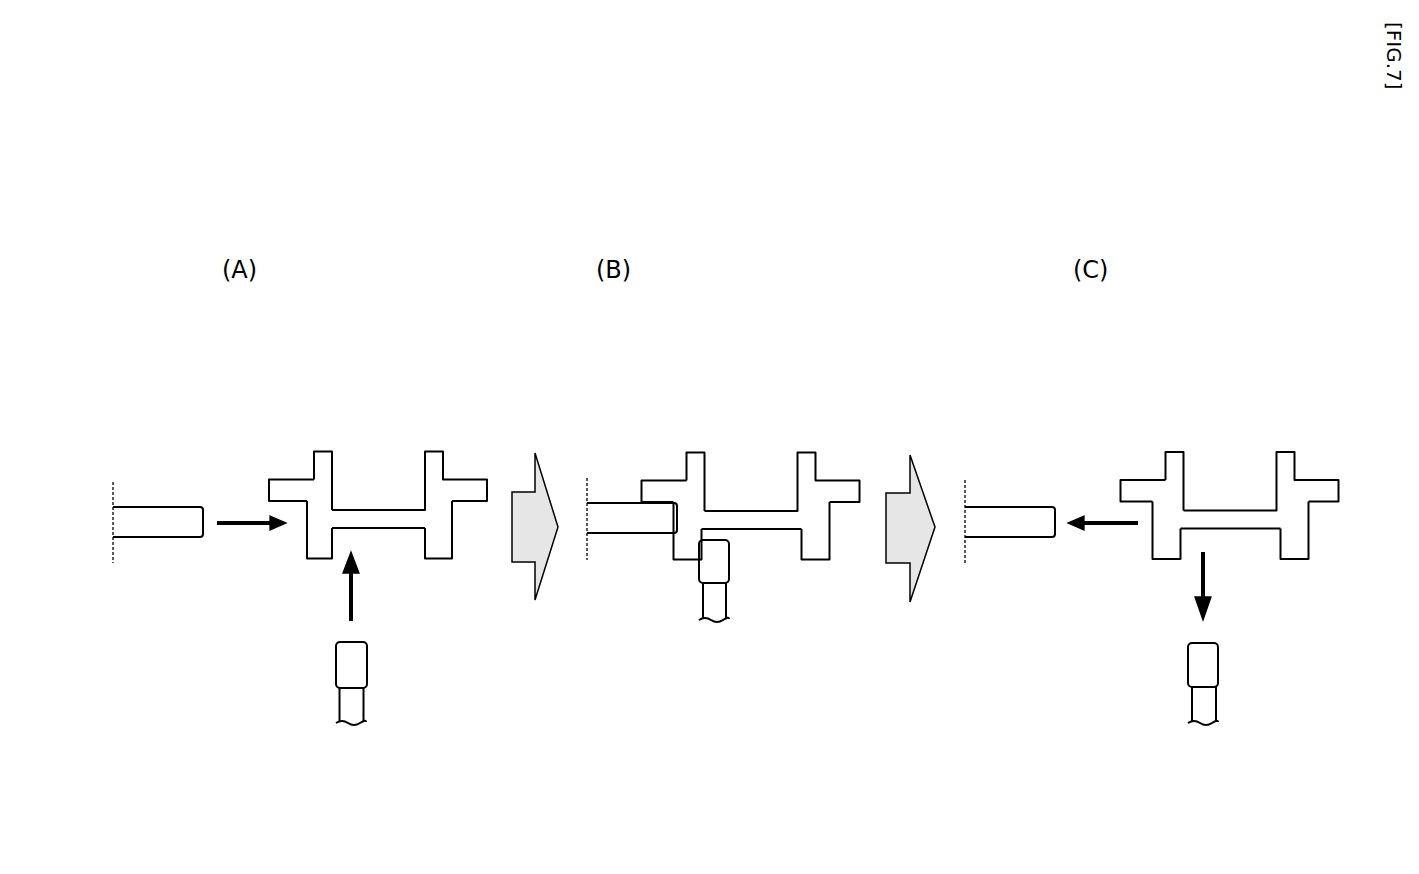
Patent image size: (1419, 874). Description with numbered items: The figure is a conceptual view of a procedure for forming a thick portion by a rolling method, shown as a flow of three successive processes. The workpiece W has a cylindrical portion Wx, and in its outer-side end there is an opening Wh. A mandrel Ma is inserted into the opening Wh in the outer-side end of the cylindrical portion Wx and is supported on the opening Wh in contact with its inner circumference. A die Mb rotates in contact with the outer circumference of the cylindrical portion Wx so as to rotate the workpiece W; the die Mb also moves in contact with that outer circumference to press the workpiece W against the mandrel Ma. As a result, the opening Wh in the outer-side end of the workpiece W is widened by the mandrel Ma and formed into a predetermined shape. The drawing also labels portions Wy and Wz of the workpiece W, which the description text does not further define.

The workpiece W is at (799, 508).
The cylindrical portion Wx is at (323, 450).
The journal / shaft end portion of workpiece Wy is at (285, 478).
The counterweight / lower portion of workpiece Wz is at (1151, 547).
The opening Wh is at (400, 553).
The mandrel Ma is at (364, 703).
The die Mb is at (150, 537).